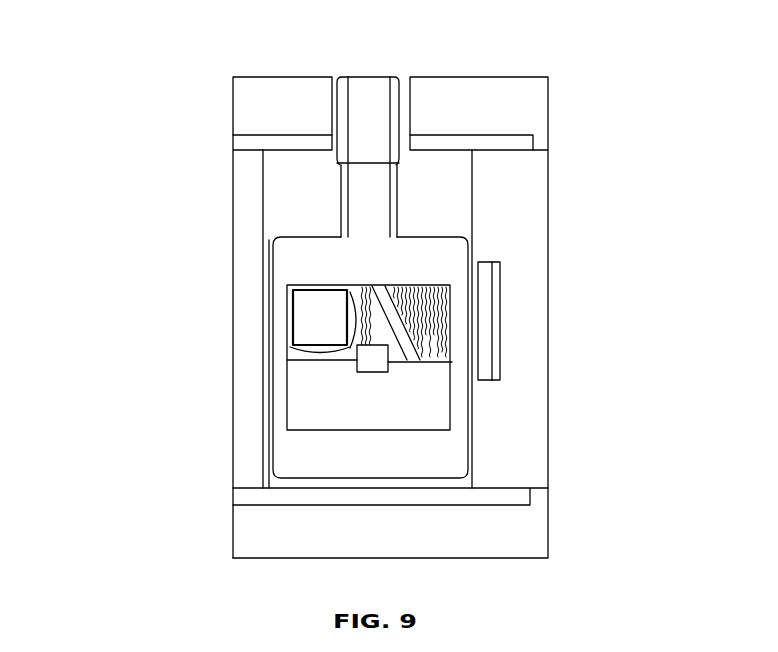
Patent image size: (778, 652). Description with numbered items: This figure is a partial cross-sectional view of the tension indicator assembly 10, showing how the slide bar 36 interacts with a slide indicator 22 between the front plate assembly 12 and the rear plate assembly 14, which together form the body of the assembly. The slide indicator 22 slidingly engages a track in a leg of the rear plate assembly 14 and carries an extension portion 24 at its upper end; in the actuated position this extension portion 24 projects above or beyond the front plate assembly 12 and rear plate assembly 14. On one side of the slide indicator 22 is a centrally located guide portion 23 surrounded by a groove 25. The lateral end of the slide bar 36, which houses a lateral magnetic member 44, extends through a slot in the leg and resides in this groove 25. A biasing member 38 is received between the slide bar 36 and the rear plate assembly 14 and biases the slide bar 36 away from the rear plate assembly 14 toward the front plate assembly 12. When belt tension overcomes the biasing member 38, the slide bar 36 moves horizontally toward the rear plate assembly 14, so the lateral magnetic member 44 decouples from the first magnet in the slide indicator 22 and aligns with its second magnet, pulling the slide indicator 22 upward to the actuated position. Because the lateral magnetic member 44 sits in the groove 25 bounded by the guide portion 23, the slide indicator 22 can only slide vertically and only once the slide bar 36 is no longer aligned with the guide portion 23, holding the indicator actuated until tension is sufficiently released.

The indicator assembly 10 is at (199, 152).
The front plate assembly 12 is at (222, 368).
The rear plate assembly 14 is at (548, 393).
The slide indicator 22 is at (417, 253).
The guide portion 23 is at (388, 363).
The extension portion 24 is at (395, 128).
The groove 25 is at (310, 407).
The slide bar 36 is at (292, 292).
The biasing member 38 is at (443, 333).
The lateral magnetic member 44 is at (310, 310).